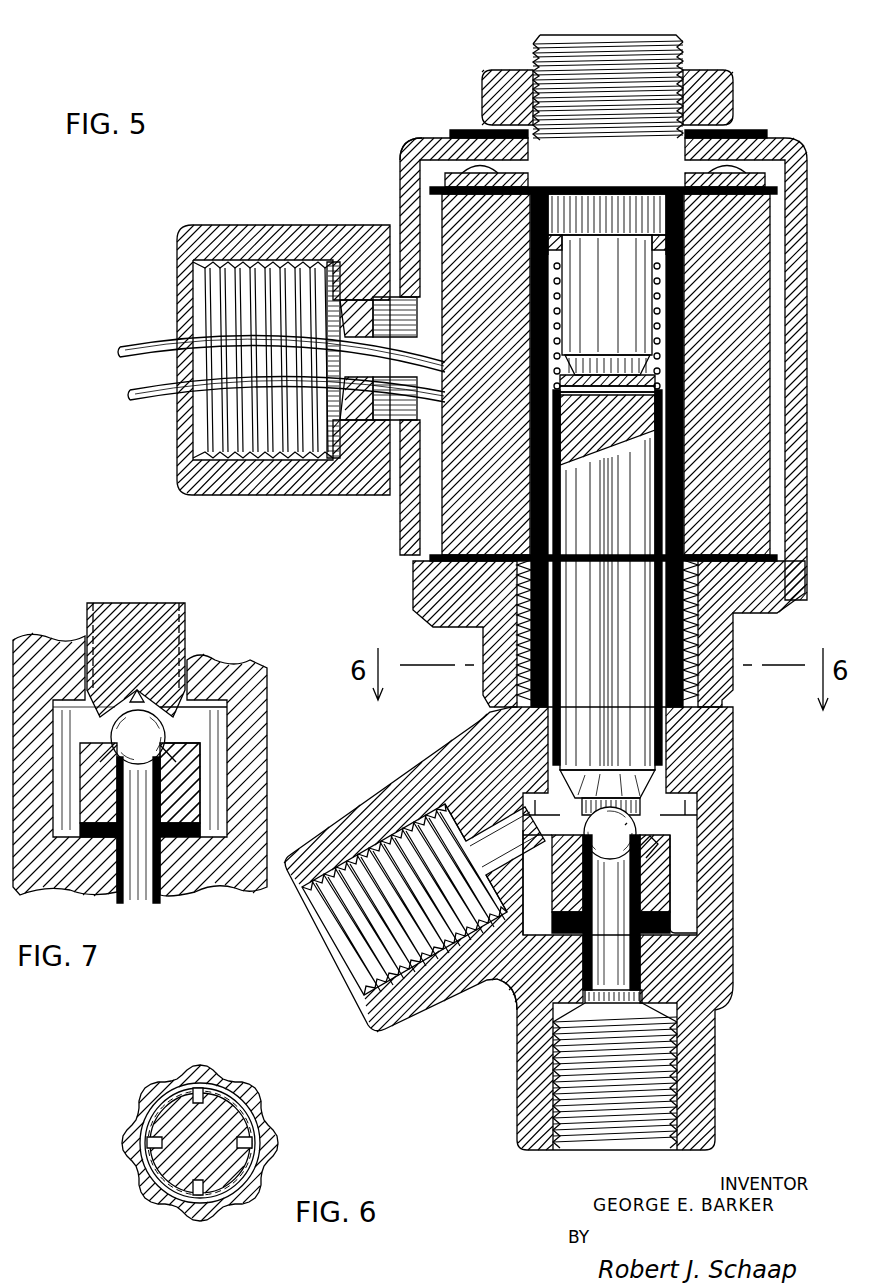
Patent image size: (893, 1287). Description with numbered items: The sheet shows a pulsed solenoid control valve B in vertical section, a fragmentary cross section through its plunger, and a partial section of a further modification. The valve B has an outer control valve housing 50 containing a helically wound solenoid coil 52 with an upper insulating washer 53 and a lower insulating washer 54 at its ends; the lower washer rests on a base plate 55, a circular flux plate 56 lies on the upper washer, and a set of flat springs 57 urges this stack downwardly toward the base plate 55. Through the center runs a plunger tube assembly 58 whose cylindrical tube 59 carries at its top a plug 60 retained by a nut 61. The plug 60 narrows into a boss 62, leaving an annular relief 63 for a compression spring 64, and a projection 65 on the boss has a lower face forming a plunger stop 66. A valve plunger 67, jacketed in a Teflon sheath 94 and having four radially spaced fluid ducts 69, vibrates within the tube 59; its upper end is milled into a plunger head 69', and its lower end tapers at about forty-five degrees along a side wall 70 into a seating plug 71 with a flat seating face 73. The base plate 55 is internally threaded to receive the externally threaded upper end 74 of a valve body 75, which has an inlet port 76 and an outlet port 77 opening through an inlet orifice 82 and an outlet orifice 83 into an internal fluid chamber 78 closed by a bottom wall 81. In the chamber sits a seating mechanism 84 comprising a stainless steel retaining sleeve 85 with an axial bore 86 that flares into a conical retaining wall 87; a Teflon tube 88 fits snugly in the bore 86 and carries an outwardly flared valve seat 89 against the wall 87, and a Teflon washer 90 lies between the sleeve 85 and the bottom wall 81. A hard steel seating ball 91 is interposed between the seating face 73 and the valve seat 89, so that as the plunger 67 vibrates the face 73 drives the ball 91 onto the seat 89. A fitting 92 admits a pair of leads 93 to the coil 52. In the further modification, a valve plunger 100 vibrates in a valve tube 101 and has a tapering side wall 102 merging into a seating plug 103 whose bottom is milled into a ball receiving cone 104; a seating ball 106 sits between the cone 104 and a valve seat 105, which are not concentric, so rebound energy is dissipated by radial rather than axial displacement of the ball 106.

In FIG. 5, the outer control valve housing 50 is at (402, 162).
In FIG. 5, the solenoid coil 52 is at (770, 222).
In FIG. 5, the upper insulating washer 53 is at (777, 190).
In FIG. 5, the lower insulating washer 54 is at (775, 556).
In FIG. 5, the base plate 55 is at (807, 600).
In FIG. 5, the flux plate 56 is at (772, 172).
In FIG. 5, the flat springs 57 is at (757, 165).
In FIG. 5, the plunger tube assembly 58 is at (702, 449).
In FIG. 5, the cylindrical tube 59 is at (690, 492).
In FIG. 5, the plug 60 is at (672, 55).
In FIG. 5, the nut 61 is at (733, 85).
In FIG. 5, the boss 62 is at (640, 312).
In FIG. 5, the annular relief 63 is at (662, 325).
In FIG. 5, the compression spring 64 is at (686, 292).
In FIG. 5, the projection 65 is at (652, 353).
In FIG. 5, the plunger stop 66 is at (648, 370).
In FIG. 5, the valve plunger 67 is at (660, 423).
In FIG. 6, the valve plunger 67 is at (217, 1113).
In FIG. 5, the fluid ducts 69 is at (692, 395).
In FIG. 6, the fluid ducts 69 is at (198, 1138).
In FIG. 5, the plunger head 69' is at (700, 380).
In FIG. 5, the tapering side wall 70 is at (653, 777).
In FIG. 5, the plunger seating plug 71 is at (647, 797).
In FIG. 5, the seating face 73 is at (640, 812).
In FIG. 5, the externally threaded upper end 74 is at (530, 645).
In FIG. 5, the valve body 75 is at (468, 735).
In FIG. 5, the inlet port 76 is at (638, 1150).
In FIG. 5, the outlet port 77 is at (345, 912).
In FIG. 5, the internal fluid chamber 78 is at (500, 840).
In FIG. 5, the bottom wall 81 is at (493, 982).
In FIG. 5, the inlet orifice 82 is at (675, 945).
In FIG. 5, the outlet orifice 83 is at (440, 855).
In FIG. 5, the seating mechanism 84 is at (690, 906).
In FIG. 5, the retaining sleeve 85 is at (672, 890).
In FIG. 5, the axial bore 86 is at (620, 907).
In FIG. 5, the retaining wall 87 is at (660, 840).
In FIG. 5, the Teflon tube 88 is at (650, 992).
In FIG. 5, the valve seat 89 is at (650, 820).
In FIG. 5, the Teflon washer 90 is at (705, 925).
In FIG. 5, the seating ball 91 is at (625, 826).
In FIG. 5, the fitting 92 is at (233, 227).
In FIG. 5, the leads 93 is at (117, 365).
In FIG. 6, the Teflon sheath 94 is at (250, 1123).
In FIG. 5, the pulsed solenoid control valve B is at (302, 212).
In FIG. 7, the valve plunger 100 is at (170, 612).
In FIG. 7, the valve tube 101 is at (190, 633).
In FIG. 7, the tapering side wall 102 is at (200, 690).
In FIG. 7, the plunger seating plug 103 is at (213, 700).
In FIG. 7, the ball receiving cone 104 is at (147, 689).
In FIG. 7, the valve seat 105 is at (173, 733).
In FIG. 7, the seating ball 106 is at (200, 760).